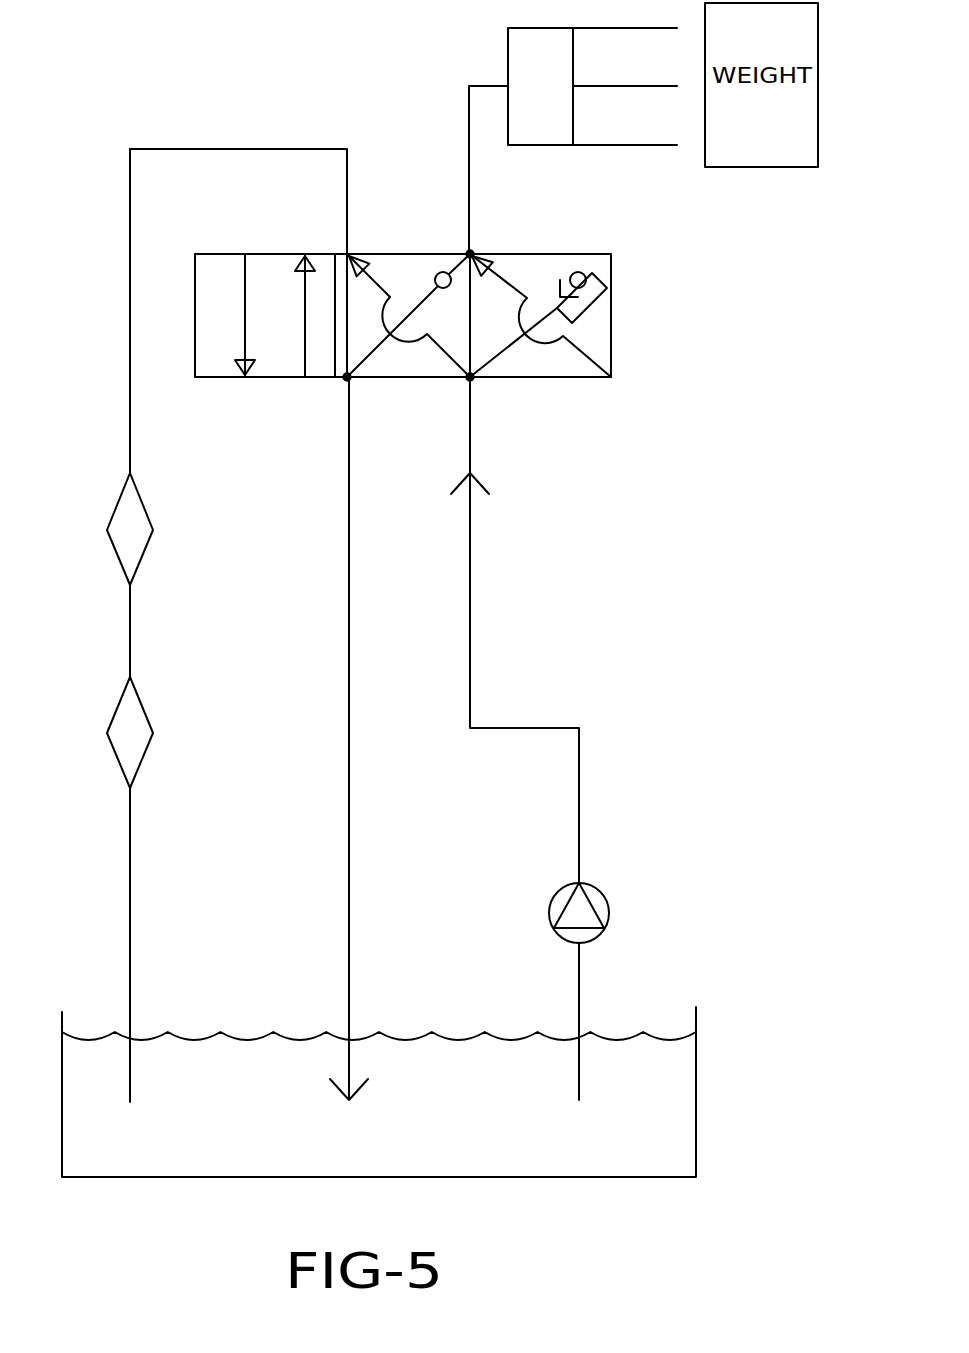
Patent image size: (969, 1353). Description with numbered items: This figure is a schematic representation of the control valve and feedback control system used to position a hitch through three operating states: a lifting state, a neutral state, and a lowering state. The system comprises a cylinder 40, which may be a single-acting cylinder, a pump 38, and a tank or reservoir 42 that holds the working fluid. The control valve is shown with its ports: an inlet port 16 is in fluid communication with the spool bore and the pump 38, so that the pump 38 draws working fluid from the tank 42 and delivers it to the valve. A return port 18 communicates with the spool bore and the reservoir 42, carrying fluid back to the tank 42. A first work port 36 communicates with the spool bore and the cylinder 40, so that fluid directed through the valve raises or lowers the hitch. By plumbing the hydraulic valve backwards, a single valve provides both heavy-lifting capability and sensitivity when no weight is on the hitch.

The inlet port 16 is at (305, 378).
The return port 18 is at (349, 254).
The first work port 36 is at (305, 254).
The pump 38 is at (609, 913).
The cylinder 40 is at (553, 145).
The tank 42 is at (212, 1116).